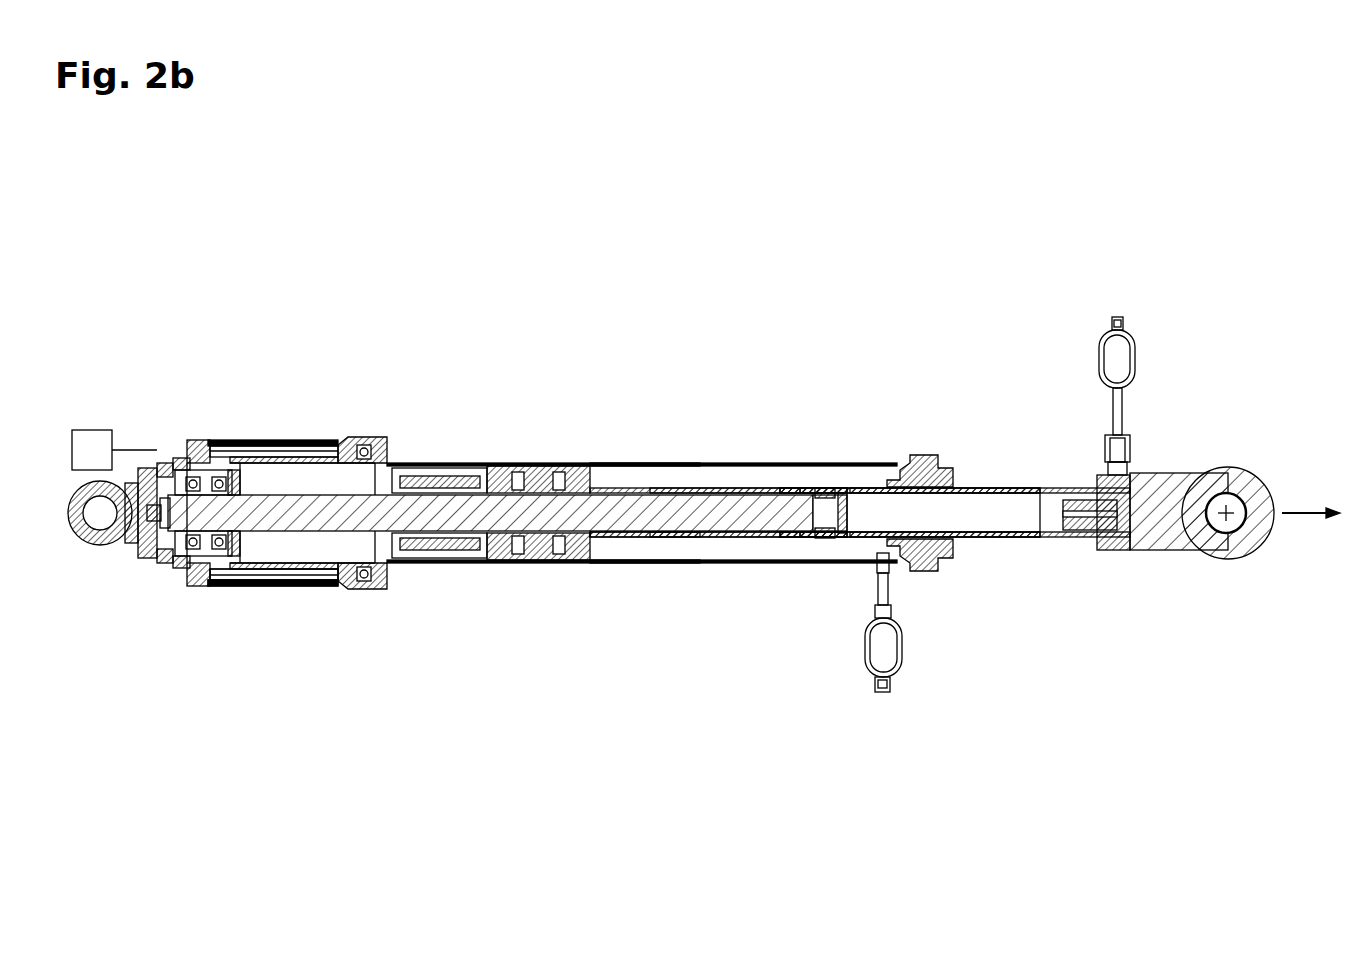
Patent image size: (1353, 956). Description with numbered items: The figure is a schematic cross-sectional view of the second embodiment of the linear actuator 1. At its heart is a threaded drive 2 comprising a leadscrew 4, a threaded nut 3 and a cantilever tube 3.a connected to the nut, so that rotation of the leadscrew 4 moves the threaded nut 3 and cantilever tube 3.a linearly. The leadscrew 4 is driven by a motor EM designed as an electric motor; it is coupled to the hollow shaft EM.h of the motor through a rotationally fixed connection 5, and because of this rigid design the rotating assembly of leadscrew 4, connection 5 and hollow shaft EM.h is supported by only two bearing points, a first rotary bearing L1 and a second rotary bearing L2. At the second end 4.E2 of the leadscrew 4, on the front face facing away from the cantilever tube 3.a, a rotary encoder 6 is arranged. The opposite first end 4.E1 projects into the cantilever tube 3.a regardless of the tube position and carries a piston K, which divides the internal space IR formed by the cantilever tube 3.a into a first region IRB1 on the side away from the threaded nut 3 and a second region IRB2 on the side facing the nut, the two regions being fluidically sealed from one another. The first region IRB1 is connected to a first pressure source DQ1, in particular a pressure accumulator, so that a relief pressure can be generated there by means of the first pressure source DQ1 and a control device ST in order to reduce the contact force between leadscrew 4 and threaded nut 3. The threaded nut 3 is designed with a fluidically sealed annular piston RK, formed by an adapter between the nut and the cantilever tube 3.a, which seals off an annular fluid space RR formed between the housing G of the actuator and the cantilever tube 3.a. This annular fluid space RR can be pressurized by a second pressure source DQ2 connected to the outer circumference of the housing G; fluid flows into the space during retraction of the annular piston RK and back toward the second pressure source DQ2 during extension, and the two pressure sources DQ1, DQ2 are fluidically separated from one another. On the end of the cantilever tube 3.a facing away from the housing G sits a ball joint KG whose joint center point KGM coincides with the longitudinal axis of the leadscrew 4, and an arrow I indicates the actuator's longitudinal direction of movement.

The linear actuator 1 is at (826, 208).
The control device ST is at (92, 445).
The rotary encoder 6 is at (157, 470).
The rotationally fixed connection 5 is at (222, 448).
The motor EM is at (272, 422).
The hollow shaft EM.h is at (300, 582).
The first rotary bearing L1 is at (220, 590).
The second rotary bearing L2 is at (367, 448).
The second end of the leadscrew 4.E2 is at (160, 560).
The threaded drive 2 is at (474, 450).
The threaded nut 3 is at (435, 466).
The cantilever tube 3.a is at (612, 462).
The housing G is at (680, 462).
The annular piston RK is at (540, 550).
The annular fluid space RR is at (622, 550).
The leadscrew 4 is at (687, 520).
The first end of the leadscrew 4.E1 is at (858, 512).
The piston K is at (823, 540).
The internal space IR is at (987, 372).
The second region IRB2 is at (800, 496).
The first region IRB1 is at (985, 505).
The first pressure source DQ1 is at (1110, 348).
The second pressure source DQ2 is at (888, 660).
The ball joint KG is at (1190, 472).
The joint center point KGM is at (1218, 536).
The direction of motion I is at (1308, 508).